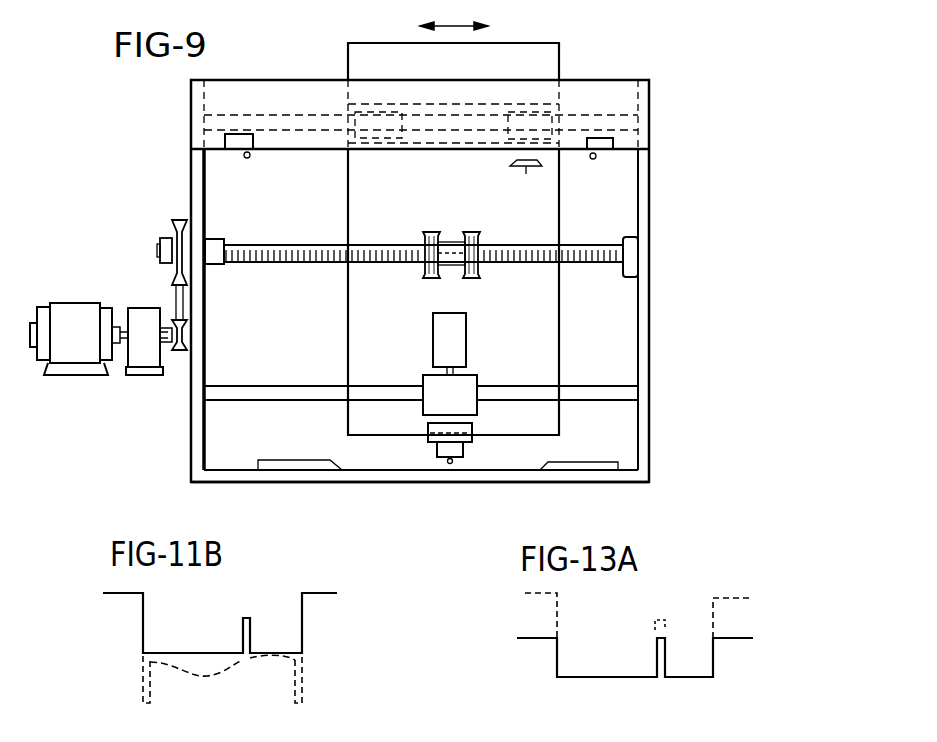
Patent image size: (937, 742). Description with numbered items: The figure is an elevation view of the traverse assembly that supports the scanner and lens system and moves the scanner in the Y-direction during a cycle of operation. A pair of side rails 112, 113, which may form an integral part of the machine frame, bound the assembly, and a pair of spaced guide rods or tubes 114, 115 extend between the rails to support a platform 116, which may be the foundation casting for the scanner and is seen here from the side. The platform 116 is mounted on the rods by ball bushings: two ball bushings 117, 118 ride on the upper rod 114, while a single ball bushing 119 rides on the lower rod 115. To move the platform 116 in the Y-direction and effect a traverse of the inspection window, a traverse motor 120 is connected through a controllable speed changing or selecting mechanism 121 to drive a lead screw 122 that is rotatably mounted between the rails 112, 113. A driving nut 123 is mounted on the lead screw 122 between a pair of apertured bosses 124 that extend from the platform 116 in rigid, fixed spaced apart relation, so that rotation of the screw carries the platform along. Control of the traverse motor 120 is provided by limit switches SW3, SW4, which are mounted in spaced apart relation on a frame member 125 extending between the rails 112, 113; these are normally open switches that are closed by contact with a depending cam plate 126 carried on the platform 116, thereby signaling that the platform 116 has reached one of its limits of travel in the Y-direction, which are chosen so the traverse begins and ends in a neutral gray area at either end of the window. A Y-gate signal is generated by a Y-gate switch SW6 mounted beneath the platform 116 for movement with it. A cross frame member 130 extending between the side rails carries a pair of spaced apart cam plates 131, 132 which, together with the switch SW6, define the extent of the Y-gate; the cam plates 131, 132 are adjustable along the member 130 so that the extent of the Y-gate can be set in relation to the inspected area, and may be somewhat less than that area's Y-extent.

The side rail 112 is at (645, 311).
The side rail 113 is at (190, 435).
The guide rod 114 is at (600, 120).
The guide rod 115 is at (625, 397).
The platform 116 is at (350, 62).
The ball bushing 117 is at (355, 116).
The ball bushing 118 is at (533, 115).
The ball bushing 119 is at (432, 402).
The traverse motor 120 is at (67, 318).
The speed changing or selecting mechanism 121 is at (143, 318).
The lead screw 122 is at (608, 248).
The driving nut 123 is at (452, 270).
The apertured bosses 124 is at (468, 232).
The frame member 125 is at (212, 99).
The cam plate 126 is at (525, 182).
The cross frame member 130 is at (622, 481).
The cam plate 131 is at (290, 470).
The cam plate 132 is at (581, 470).
The limit switch SW3 is at (236, 150).
The limit switch SW4 is at (601, 151).
The Y-gate switch SW6 is at (468, 436).